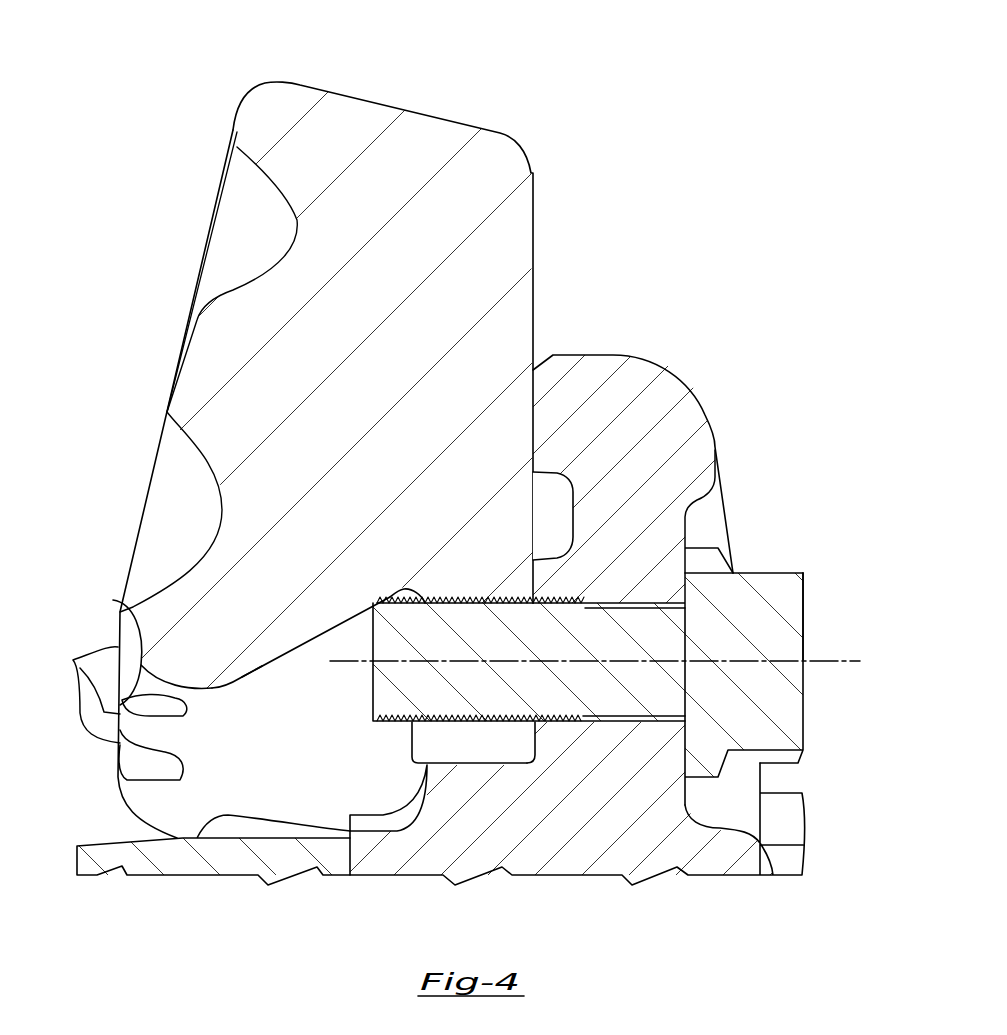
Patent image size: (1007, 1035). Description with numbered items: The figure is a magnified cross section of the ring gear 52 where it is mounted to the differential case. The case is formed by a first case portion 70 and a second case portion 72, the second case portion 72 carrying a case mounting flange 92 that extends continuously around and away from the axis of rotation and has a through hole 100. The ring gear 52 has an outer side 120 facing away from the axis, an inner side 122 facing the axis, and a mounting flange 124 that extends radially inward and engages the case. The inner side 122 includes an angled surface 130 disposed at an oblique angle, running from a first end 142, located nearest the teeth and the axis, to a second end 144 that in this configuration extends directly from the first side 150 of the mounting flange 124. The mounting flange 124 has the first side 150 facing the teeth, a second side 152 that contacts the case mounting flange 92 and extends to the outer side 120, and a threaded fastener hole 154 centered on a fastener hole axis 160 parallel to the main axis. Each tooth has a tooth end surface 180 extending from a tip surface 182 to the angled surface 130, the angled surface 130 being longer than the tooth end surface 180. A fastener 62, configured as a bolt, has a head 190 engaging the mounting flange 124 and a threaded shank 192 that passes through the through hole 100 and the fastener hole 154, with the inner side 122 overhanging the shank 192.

The ring gear 52 is at (518, 140).
The fastener 62 is at (805, 570).
The first case portion 70 is at (107, 843).
The second case portion 72 is at (675, 868).
The case mounting flange 92 is at (689, 390).
The through hole 100 is at (609, 718).
The outer side 120 is at (328, 92).
The inner side 122 is at (243, 682).
The mounting flange 124 is at (400, 765).
The angled surface 130 is at (298, 647).
The first end 142 is at (212, 688).
The second end 144 is at (402, 590).
The first side 150 is at (412, 744).
The second side 152 is at (535, 743).
The fastener hole 154 is at (494, 716).
The fastener hole axis 160 is at (852, 661).
The tooth end surface 180 is at (113, 600).
The tip surface 182 is at (73, 660).
The head 190 is at (805, 642).
The shank 192 is at (553, 645).